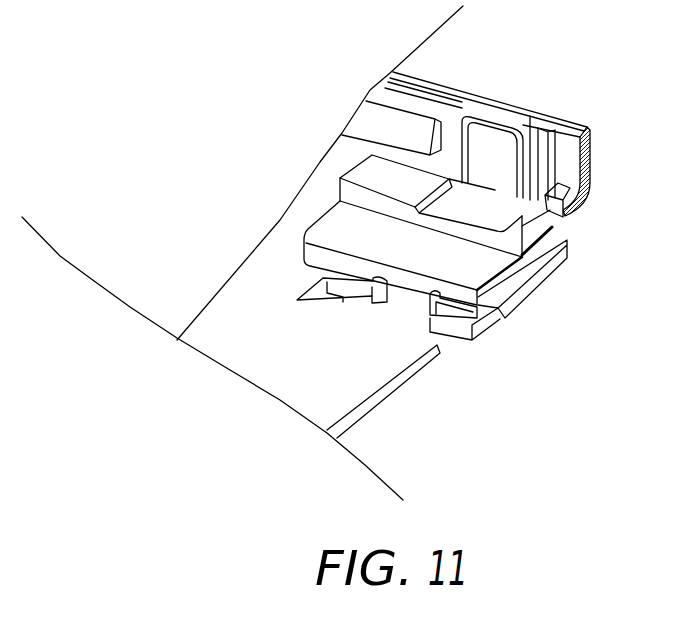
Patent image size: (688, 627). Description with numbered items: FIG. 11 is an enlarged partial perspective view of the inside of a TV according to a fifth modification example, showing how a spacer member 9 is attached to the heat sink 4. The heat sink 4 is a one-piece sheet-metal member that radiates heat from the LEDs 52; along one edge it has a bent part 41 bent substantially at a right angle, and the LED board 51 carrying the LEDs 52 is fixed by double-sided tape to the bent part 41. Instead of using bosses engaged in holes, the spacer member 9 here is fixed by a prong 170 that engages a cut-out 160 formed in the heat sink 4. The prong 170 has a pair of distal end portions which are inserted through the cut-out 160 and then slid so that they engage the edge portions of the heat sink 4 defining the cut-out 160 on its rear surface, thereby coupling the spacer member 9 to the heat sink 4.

The heat sink 4 is at (287, 275).
The spacer member 9 is at (388, 181).
The bent part 41 is at (538, 114).
The LED board 51 is at (466, 110).
The LED 52 is at (412, 117).
The cut-out 160 is at (357, 287).
The prong 170 is at (403, 305).